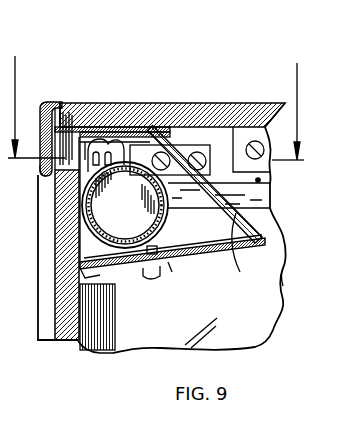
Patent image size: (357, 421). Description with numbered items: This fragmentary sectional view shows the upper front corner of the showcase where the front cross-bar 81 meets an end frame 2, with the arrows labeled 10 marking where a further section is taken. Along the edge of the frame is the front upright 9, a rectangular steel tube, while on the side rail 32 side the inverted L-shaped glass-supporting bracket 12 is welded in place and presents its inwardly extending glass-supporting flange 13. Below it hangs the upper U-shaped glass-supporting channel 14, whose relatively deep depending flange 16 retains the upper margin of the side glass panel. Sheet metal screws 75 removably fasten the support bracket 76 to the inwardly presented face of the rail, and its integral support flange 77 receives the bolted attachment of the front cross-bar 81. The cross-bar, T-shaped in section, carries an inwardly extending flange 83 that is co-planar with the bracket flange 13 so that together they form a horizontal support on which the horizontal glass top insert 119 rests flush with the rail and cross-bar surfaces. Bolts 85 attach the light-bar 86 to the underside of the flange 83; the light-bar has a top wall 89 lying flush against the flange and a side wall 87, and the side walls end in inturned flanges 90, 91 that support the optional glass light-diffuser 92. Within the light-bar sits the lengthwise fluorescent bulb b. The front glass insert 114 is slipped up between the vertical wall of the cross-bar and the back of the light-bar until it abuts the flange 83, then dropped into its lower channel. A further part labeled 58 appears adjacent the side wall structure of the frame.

The section line 10- 10 is at (160, 96).
The end frame 2 is at (258, 203).
The front upright 9 is at (110, 322).
The glass-supporting bracket 12 is at (240, 147).
The glass-supporting flange 13 is at (253, 130).
The upper U-shaped glass-supporting channel 14 is at (262, 216).
The depending flange 16 is at (262, 182).
The side rail 32 is at (43, 172).
The side post 58 is at (39, 224).
The sheet metal screws 75 is at (198, 157).
The support bracket 76 is at (185, 148).
The support flange 77 is at (133, 150).
The front cross-bar 81 is at (44, 150).
The inwardly extending flange 83 is at (92, 128).
The bolts 85 is at (118, 138).
The light-bar 86 is at (220, 262).
The side wall 87 is at (55, 278).
The top wall 89 is at (138, 138).
The inturned flange 90 is at (270, 258).
The inturned flange 91 is at (100, 350).
The glass light-diffuser 92 is at (173, 275).
The glass insert 114 is at (68, 341).
The horizontal glass top insert 119 is at (72, 108).
The fluorescent bulb b is at (170, 228).